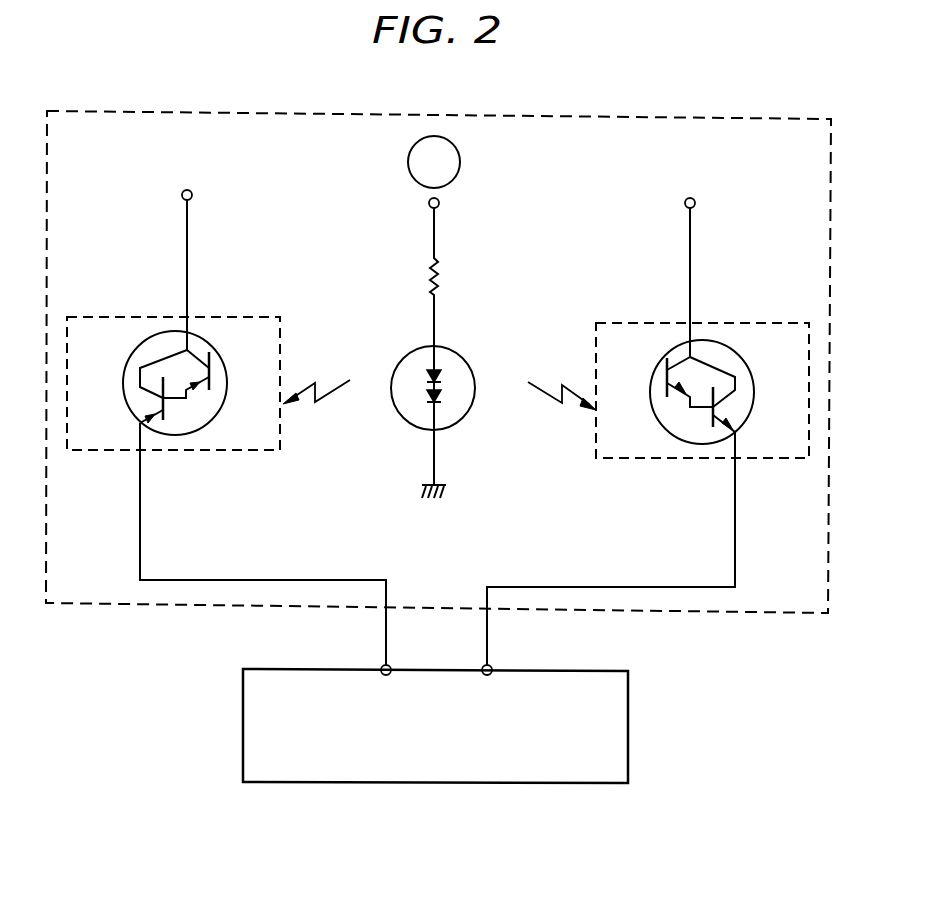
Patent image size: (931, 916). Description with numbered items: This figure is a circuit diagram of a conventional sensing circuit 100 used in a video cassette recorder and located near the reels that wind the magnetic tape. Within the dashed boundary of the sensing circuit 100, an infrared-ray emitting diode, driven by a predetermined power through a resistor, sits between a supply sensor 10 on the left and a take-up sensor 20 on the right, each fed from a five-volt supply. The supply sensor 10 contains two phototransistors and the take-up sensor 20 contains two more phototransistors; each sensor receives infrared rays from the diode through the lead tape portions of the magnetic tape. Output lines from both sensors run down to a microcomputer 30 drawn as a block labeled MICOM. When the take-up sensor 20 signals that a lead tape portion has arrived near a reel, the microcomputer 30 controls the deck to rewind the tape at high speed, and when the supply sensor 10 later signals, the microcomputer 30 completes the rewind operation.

The sensing circuit 100 is at (190, 111).
The supply sensor 10 is at (240, 317).
The take-up sensor 20 is at (757, 323).
The microcomputer 30 is at (578, 670).